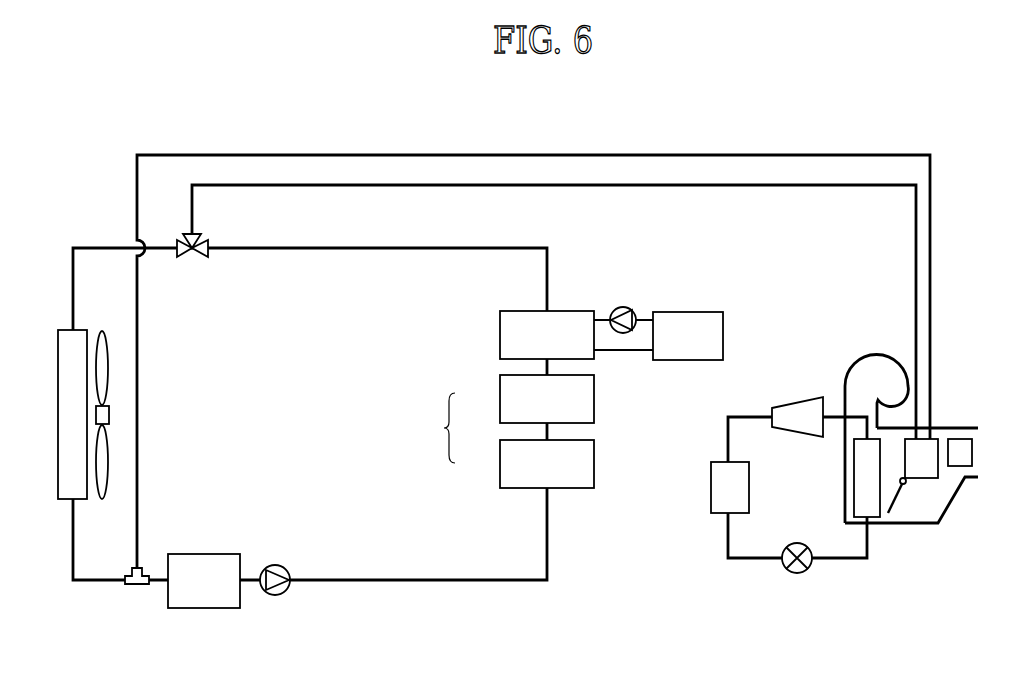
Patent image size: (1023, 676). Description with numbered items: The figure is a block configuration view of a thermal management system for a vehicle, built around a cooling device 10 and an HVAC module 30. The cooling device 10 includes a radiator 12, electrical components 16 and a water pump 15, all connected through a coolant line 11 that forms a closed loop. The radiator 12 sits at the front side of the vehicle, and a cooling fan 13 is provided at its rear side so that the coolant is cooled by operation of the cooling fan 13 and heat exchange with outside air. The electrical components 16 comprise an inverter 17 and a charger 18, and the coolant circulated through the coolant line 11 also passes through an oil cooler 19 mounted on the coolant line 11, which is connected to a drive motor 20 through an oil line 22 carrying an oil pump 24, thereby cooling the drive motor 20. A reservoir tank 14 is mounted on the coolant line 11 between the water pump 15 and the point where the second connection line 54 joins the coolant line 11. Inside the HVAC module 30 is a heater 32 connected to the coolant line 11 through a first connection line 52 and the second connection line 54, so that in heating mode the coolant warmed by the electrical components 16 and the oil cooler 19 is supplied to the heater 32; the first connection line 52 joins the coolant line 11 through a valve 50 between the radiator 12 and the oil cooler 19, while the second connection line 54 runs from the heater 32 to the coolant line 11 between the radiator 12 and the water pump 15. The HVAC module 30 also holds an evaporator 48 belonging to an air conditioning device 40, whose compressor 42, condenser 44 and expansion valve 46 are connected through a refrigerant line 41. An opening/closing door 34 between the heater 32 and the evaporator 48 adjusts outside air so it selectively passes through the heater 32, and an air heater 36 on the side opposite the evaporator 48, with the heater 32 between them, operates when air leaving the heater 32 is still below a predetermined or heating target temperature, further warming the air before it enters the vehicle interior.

The cooling device 10 is at (80, 230).
The coolant line 11 is at (418, 583).
The radiator 12 is at (58, 413).
The cooling fan 13 is at (103, 330).
The reservoir tank 14 is at (203, 608).
The water pump 15 is at (275, 596).
The electrical components 16 is at (440, 428).
The inverter 17 is at (500, 397).
The charger 18 is at (500, 462).
The oil cooler 19 is at (500, 335).
The drive motor 20 is at (687, 312).
The oil line 22 is at (624, 352).
The oil pump 24 is at (623, 307).
The HVAC module 30 is at (953, 515).
The heater 32 is at (938, 450).
The opening/closing door 34 is at (900, 497).
The air heater 36 is at (972, 453).
The air conditioning device 40 is at (769, 527).
The refrigerant line 41 is at (746, 565).
The compressor 42 is at (798, 402).
The condenser 44 is at (711, 487).
The expansion valve 46 is at (797, 573).
The evaporator 48 is at (880, 520).
The valve 50 is at (201, 256).
The first connection line 52 is at (623, 187).
The second connection line 54 is at (623, 155).